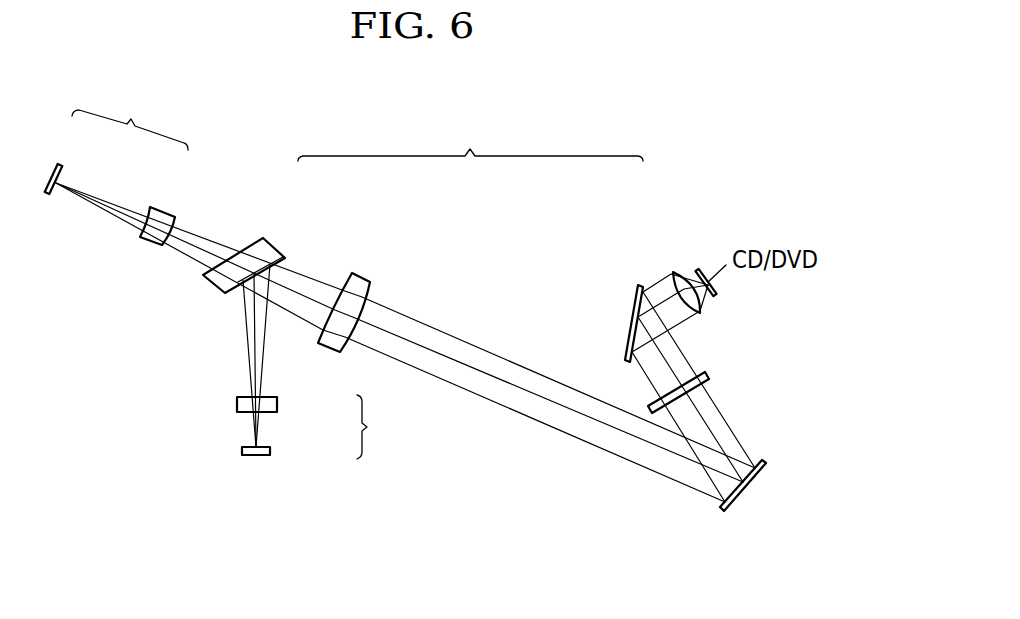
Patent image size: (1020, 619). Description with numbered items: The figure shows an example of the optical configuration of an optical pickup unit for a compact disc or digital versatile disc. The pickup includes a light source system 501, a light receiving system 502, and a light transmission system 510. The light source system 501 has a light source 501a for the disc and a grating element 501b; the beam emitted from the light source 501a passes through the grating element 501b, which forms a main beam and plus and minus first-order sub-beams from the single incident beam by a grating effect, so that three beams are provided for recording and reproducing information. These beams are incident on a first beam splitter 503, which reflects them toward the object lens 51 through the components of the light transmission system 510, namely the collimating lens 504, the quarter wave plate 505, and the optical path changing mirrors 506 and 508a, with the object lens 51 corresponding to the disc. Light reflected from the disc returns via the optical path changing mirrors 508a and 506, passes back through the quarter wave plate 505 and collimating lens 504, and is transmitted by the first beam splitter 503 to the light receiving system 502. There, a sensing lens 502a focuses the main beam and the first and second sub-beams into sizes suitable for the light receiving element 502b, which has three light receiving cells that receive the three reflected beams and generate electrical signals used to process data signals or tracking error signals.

The light source system 501 is at (383, 427).
The light source 501a is at (270, 451).
The grating element 501b is at (277, 403).
The light receiving system 502 is at (130, 120).
The sensing lens 502a is at (163, 211).
The light receiving element 502b is at (63, 164).
The first beam splitter 503 is at (267, 247).
The collimating lens 504 is at (361, 283).
The quarter wave plate 505 is at (707, 377).
The optical path changing mirror 506 is at (767, 462).
The optical path changing mirror 508a is at (635, 312).
The light transmission system 510 is at (470, 139).
The object lens 51 is at (704, 312).